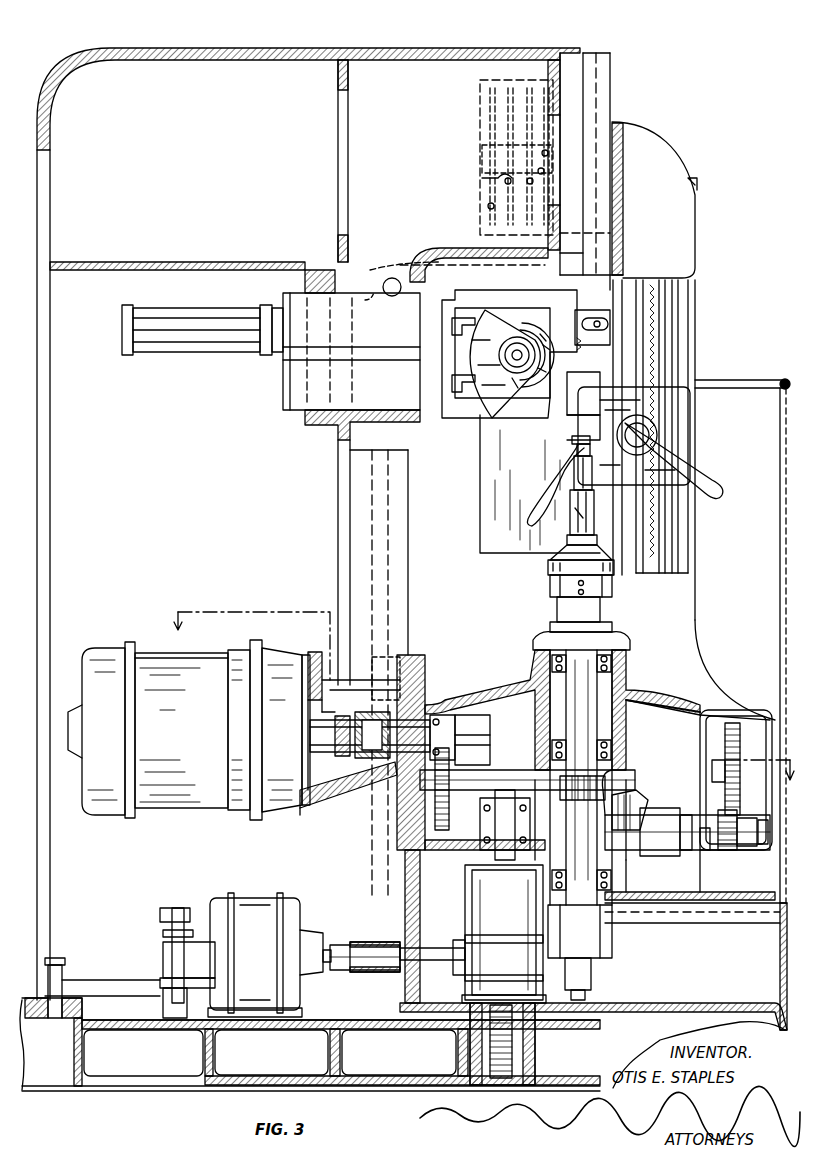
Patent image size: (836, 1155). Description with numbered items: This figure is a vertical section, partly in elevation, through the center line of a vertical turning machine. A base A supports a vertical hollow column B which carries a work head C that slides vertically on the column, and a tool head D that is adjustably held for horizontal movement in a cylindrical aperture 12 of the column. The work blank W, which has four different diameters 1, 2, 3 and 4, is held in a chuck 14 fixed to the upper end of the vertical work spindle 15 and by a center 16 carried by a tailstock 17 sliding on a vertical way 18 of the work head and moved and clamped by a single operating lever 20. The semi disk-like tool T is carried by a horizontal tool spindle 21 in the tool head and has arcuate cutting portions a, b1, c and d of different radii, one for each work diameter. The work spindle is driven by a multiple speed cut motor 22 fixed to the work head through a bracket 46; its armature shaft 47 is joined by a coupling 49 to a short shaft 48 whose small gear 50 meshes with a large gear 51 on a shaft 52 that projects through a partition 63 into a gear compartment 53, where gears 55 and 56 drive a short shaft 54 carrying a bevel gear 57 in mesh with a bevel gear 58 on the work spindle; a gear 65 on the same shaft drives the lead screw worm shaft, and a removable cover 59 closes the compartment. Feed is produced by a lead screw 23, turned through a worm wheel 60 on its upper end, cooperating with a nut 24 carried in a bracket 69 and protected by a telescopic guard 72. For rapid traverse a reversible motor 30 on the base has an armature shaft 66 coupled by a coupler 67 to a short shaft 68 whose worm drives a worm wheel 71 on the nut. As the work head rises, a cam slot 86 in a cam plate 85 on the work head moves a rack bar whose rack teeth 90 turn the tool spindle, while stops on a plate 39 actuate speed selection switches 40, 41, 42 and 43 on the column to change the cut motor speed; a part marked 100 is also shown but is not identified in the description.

The column B is at (128, 52).
The base A is at (205, 1078).
The work head C is at (680, 610).
The tool head D is at (485, 395).
The tool T is at (538, 332).
The work blank W is at (575, 512).
The arcuate cutting portion a is at (548, 335).
The arcuate cutting portion b1 is at (550, 347).
The arcuate cutting portion c is at (547, 371).
The arcuate cutting portion d is at (512, 386).
The work diameter 1 is at (590, 450).
The work diameter 2 is at (592, 472).
The work diameter 3 is at (590, 500).
The work diameter 4 is at (585, 535).
The cylindrical aperture 12 is at (418, 422).
The chuck 14 is at (555, 583).
The work spindle 15 is at (570, 608).
The center 16 is at (572, 439).
The tailstock 17 is at (680, 418).
The vertical way 18 is at (620, 292).
The operating lever 20 is at (720, 490).
The tool spindle 21 is at (508, 362).
The cut motor 22 is at (103, 653).
The lead screw 23 is at (513, 1040).
The nut 24 is at (462, 963).
The rapid-traverse motor 30 is at (250, 907).
The plate 39 is at (482, 86).
The speed selection switch 40 is at (549, 155).
The speed selection switch 41 is at (546, 174).
The speed selection switch 42 is at (483, 183).
The speed selection switch 43 is at (483, 162).
The bracket 46 is at (405, 658).
The armature shaft 47 is at (325, 722).
The short shaft 48 is at (466, 725).
The coupling 49 is at (362, 755).
The small gear 50 is at (455, 715).
The large gear 51 is at (460, 845).
The shaft 52 is at (452, 790).
The gear compartment 53 is at (747, 718).
The short shaft 54 is at (655, 825).
The gear 55 is at (741, 760).
The gear 56 is at (750, 848).
The bevel gear 57 is at (632, 858).
The bevel gear 58 is at (556, 802).
The removable cover 59 is at (762, 808).
The worm wheel 60 is at (540, 766).
The partition 63 is at (700, 738).
The gear 65 is at (708, 852).
The armature shaft 66 is at (345, 950).
The coupler 67 is at (452, 950).
The short shaft 68 is at (390, 950).
The bracket 69 is at (470, 984).
The worm wheel 71 is at (462, 930).
The telescopic guard 72 is at (465, 885).
The cam plate 85 is at (485, 532).
The cam slot 86 is at (550, 478).
The rack teeth 90 is at (592, 312).
The tool 100 is at (190, 352).